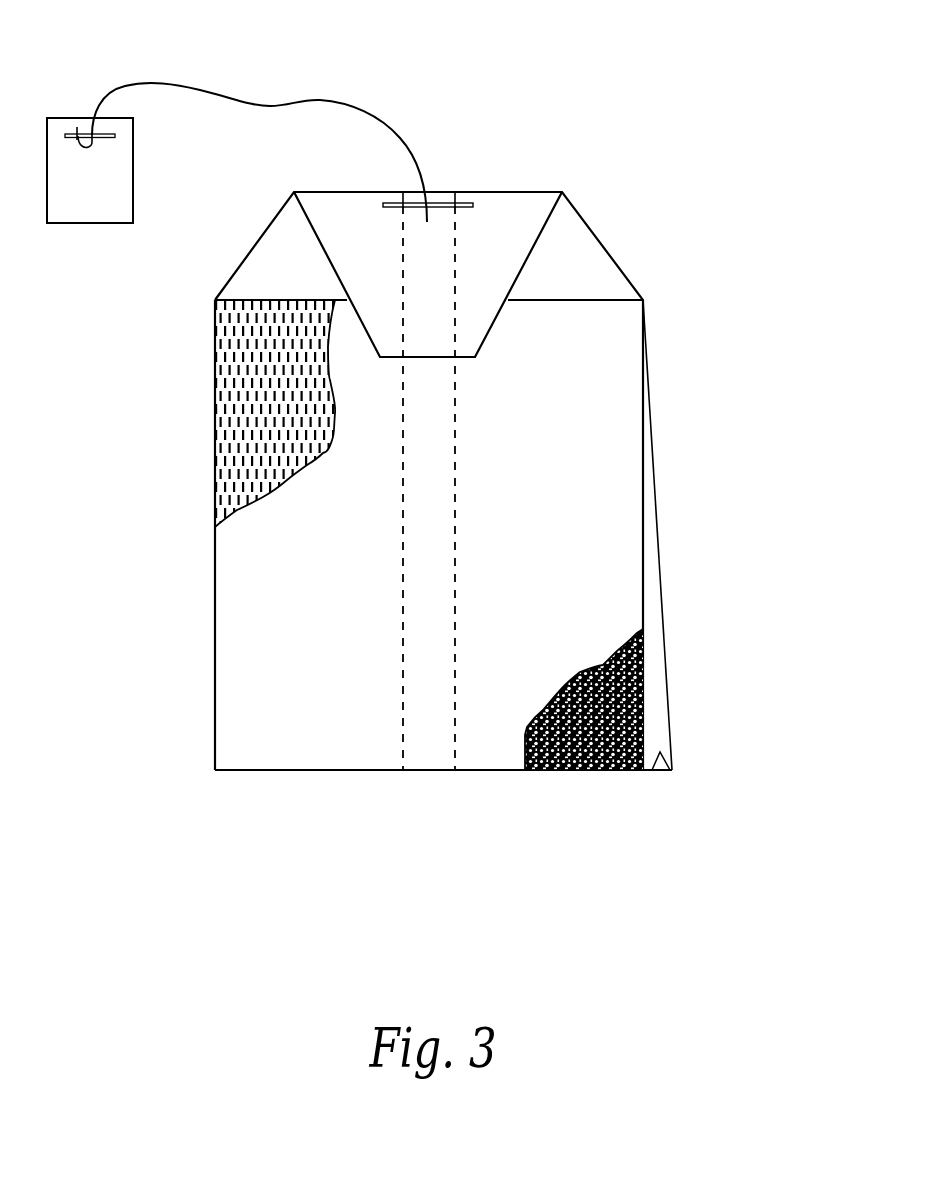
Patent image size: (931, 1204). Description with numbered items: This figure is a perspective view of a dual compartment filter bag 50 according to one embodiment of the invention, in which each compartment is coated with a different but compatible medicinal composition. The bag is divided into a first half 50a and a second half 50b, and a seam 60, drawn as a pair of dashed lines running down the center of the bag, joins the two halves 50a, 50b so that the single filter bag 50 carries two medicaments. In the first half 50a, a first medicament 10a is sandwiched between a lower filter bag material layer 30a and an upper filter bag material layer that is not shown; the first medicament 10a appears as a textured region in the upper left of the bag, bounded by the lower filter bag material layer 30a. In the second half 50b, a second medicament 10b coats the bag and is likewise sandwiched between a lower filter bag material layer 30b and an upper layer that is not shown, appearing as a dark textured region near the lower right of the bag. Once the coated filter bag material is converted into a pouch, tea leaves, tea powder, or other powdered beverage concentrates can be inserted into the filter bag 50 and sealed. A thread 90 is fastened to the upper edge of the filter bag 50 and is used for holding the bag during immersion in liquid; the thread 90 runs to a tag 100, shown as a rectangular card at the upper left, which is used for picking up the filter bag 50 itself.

The dual compartment filter bag 50 is at (743, 244).
The first half of the filter bag 50a is at (214, 651).
The second half of the filter bag 50b is at (647, 442).
The seam 60 is at (425, 735).
The thread 90 is at (313, 100).
The tag 100 is at (87, 226).
The first medicament 10a is at (247, 397).
The lower filter bag material layer 30a is at (309, 467).
The second medicament 10b is at (649, 693).
The lower filter bag material layer 30b is at (601, 664).